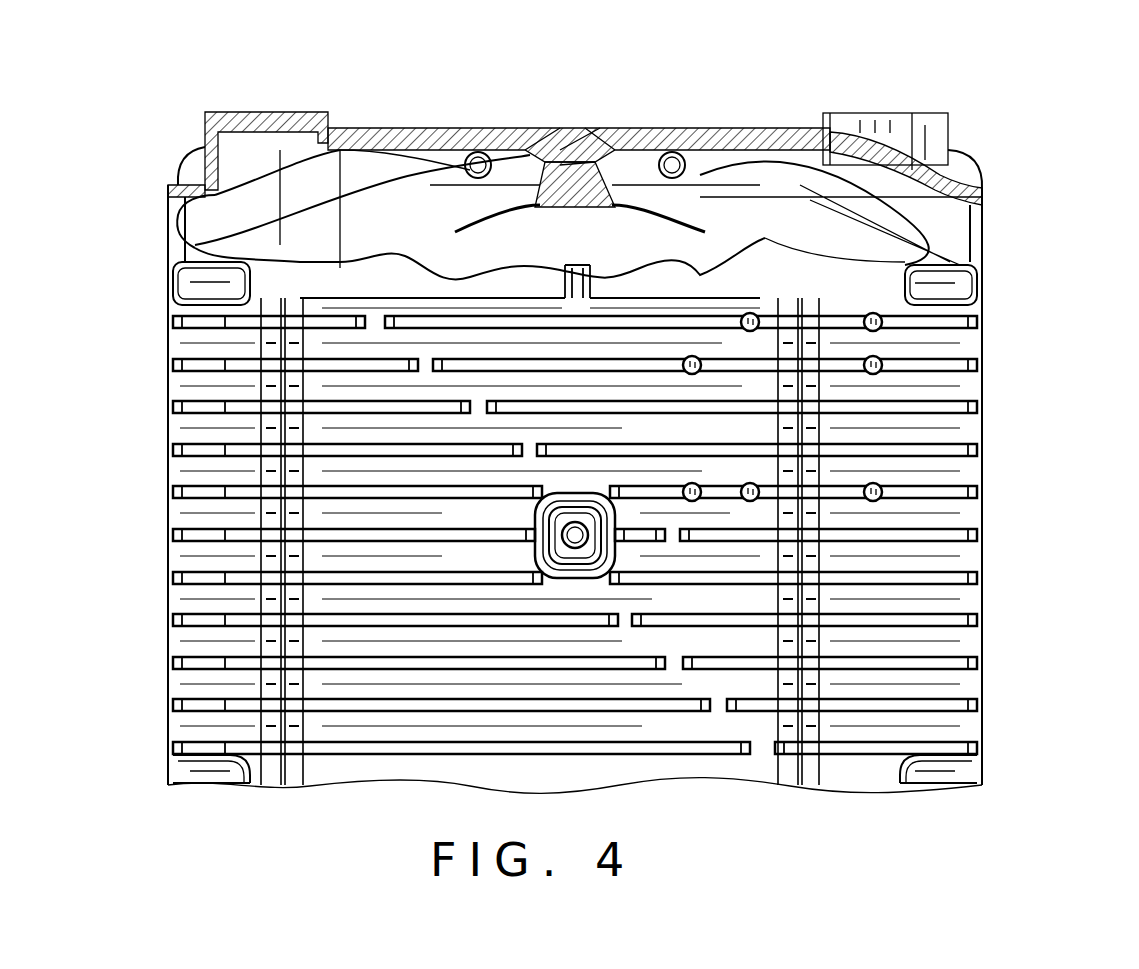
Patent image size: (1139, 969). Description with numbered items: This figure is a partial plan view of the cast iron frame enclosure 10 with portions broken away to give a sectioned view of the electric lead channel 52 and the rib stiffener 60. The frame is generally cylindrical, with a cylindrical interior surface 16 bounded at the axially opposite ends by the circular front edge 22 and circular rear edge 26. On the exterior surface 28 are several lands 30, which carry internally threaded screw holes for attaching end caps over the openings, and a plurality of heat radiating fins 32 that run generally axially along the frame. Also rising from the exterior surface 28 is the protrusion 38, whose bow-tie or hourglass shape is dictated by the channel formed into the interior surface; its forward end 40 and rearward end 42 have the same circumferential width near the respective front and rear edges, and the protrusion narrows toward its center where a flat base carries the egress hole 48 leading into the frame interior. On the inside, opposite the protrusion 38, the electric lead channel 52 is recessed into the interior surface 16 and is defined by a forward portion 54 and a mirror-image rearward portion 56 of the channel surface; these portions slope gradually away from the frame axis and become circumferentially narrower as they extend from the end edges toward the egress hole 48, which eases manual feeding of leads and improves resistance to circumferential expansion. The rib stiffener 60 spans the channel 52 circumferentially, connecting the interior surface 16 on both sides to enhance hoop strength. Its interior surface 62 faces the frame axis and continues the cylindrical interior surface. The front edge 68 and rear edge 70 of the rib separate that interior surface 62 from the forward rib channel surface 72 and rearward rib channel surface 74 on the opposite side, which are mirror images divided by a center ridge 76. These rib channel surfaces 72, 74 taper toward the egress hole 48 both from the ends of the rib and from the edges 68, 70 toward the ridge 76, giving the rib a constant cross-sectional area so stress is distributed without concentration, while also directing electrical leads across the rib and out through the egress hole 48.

The frame enclosure 10 is at (1005, 380).
The cylindrical interior surface 16 is at (386, 262).
The circular front edge 22 is at (182, 577).
The circular rear edge 26 is at (982, 566).
The exterior surface 28 is at (958, 516).
The lands 30 is at (190, 292).
The heat radiating fins 32 is at (945, 625).
The protrusion 38 is at (790, 125).
The forward end 40 is at (278, 100).
The rearward end 42 is at (892, 118).
The egress hole 48 is at (618, 132).
The electric lead channel 52 is at (295, 190).
The forward portion of the channel surface 54 is at (370, 178).
The rearward portion of the channel surface 56 is at (703, 172).
The rib stiffener 60 is at (462, 213).
The rib interior surface 62 is at (540, 225).
The front edge of the rib 68 is at (470, 218).
The rear edge of the rib 70 is at (783, 150).
The forward rib channel surface 72 is at (505, 215).
The rearward rib channel surface 74 is at (700, 210).
The center ridge 76 is at (588, 190).